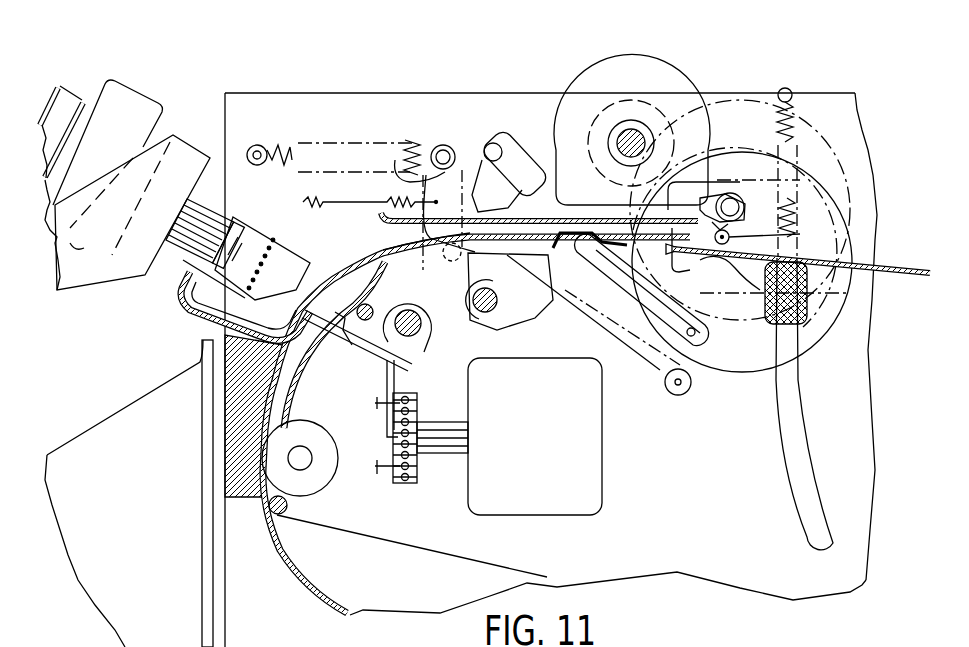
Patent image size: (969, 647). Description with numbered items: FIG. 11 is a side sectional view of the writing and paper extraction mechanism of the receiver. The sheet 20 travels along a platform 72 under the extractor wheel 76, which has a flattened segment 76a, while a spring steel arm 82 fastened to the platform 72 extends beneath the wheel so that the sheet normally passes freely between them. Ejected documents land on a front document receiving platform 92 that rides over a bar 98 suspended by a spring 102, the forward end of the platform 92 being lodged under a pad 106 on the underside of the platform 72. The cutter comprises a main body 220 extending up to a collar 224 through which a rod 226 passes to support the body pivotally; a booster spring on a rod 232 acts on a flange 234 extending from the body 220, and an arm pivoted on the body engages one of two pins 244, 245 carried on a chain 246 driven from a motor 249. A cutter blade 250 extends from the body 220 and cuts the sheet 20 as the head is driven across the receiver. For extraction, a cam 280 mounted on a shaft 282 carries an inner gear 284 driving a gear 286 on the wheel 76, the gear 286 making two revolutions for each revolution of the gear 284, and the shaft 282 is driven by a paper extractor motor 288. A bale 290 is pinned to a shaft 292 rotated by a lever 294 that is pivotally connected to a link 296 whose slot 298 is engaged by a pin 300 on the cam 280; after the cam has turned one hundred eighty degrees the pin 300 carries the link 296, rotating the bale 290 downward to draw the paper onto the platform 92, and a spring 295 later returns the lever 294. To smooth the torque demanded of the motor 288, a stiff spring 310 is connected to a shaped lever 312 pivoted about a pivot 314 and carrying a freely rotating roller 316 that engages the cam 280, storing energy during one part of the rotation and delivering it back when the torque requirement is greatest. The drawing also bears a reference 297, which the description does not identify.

The sheet 20 is at (395, 538).
The platform 72 is at (410, 255).
The extractor wheel 76 is at (612, 63).
The flattened segment 76a is at (592, 208).
The spring steel arm 82 is at (572, 252).
The front document receiving platform 92 is at (912, 268).
The bar 98 is at (830, 288).
The spring 102 is at (800, 100).
The pad 106 is at (686, 250).
The main body 220 is at (385, 385).
The collar 224 is at (405, 362).
The rod 226 is at (405, 350).
The rod 232 is at (350, 352).
The flange 234 is at (358, 330).
The pin 244 is at (378, 470).
The pin 245 is at (380, 408).
The chain 246 is at (415, 470).
The motor 249 is at (602, 497).
The cutter blade 250 is at (226, 322).
The cam 280 is at (742, 94).
The shaft 282 is at (800, 235).
The inner gear 284 is at (763, 157).
The gear 286 is at (647, 100).
The paper extractor motor 288 is at (725, 372).
The bale 290 is at (745, 207).
The shaft 292 is at (450, 322).
The lever 294 is at (395, 177).
The spring 295 is at (308, 207).
The link 296 is at (522, 150).
The pivot pin 297 is at (497, 142).
The slot 298 is at (636, 290).
The pin 300 is at (705, 395).
The stiff spring 310 is at (280, 150).
The shaped lever 312 is at (447, 147).
The pivot 314 is at (385, 241).
The roller 316 is at (661, 395).